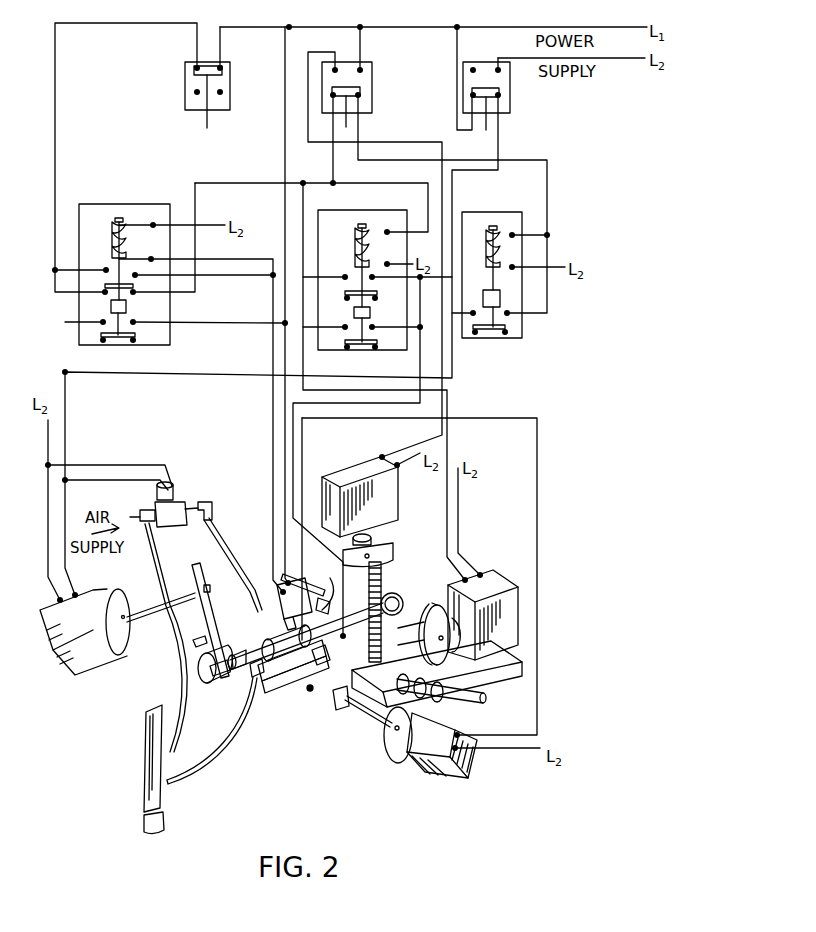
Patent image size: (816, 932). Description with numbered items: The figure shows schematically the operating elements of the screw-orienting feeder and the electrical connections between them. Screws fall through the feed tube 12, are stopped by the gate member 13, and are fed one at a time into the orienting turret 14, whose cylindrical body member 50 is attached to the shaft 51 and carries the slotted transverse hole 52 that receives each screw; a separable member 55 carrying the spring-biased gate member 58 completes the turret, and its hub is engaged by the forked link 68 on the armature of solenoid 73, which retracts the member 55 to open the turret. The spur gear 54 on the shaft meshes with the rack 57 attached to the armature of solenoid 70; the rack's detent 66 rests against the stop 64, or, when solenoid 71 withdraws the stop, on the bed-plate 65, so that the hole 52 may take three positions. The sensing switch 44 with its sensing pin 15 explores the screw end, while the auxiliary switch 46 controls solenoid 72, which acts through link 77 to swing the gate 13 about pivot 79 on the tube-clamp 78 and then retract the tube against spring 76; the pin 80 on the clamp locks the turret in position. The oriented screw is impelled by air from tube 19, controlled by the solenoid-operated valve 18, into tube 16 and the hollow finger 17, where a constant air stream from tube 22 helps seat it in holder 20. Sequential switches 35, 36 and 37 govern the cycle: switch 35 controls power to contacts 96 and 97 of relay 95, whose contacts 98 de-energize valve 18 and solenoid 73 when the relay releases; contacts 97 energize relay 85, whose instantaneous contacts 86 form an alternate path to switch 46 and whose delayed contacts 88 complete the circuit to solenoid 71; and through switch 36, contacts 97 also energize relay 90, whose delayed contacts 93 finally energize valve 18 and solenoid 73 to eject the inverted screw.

The tube 12 is at (282, 685).
The gate member 13 is at (295, 688).
The orienting turret 14 is at (243, 632).
The sensing pin 15 is at (279, 606).
The tube 16 is at (224, 737).
The hollow finger 17 is at (153, 782).
The solenoid-operated valve 18 is at (177, 511).
The tube 19 is at (236, 553).
The holder 20 is at (162, 826).
The tube 22 is at (182, 652).
The switch 35 is at (185, 83).
The switch 36 is at (362, 82).
The switch 37 is at (505, 84).
The sensing switch 44 is at (298, 578).
The auxiliary switch 46 is at (325, 590).
The cylindrical body member 50 is at (260, 678).
The shaft 51 is at (330, 650).
The transverse hole 52 is at (243, 650).
The spur gear 54 is at (400, 600).
The separable member 55 is at (208, 670).
The rack 57 is at (382, 578).
The gate member 58 is at (235, 680).
The stop 64 is at (418, 645).
The bed-plate 65 is at (460, 673).
The detent 66 is at (422, 622).
The forked link 68 is at (204, 648).
The solenoid 70 is at (375, 512).
The solenoid 71 is at (510, 623).
The solenoid 72 is at (425, 770).
The solenoid 73 is at (102, 650).
The compressed spring 76 is at (438, 702).
The link 77 is at (378, 718).
The tube-clamp 78 is at (342, 708).
The pivot 79 is at (311, 692).
The pin 80 is at (310, 630).
The relay 85 is at (362, 269).
The contacts 86 is at (347, 275).
The contacts 88 is at (346, 333).
The relay 90 is at (505, 265).
The contacts 93 is at (507, 318).
The relay 95 is at (124, 264).
The contacts 96 is at (107, 270).
The contacts 97 is at (128, 290).
The contacts 98 is at (106, 328).